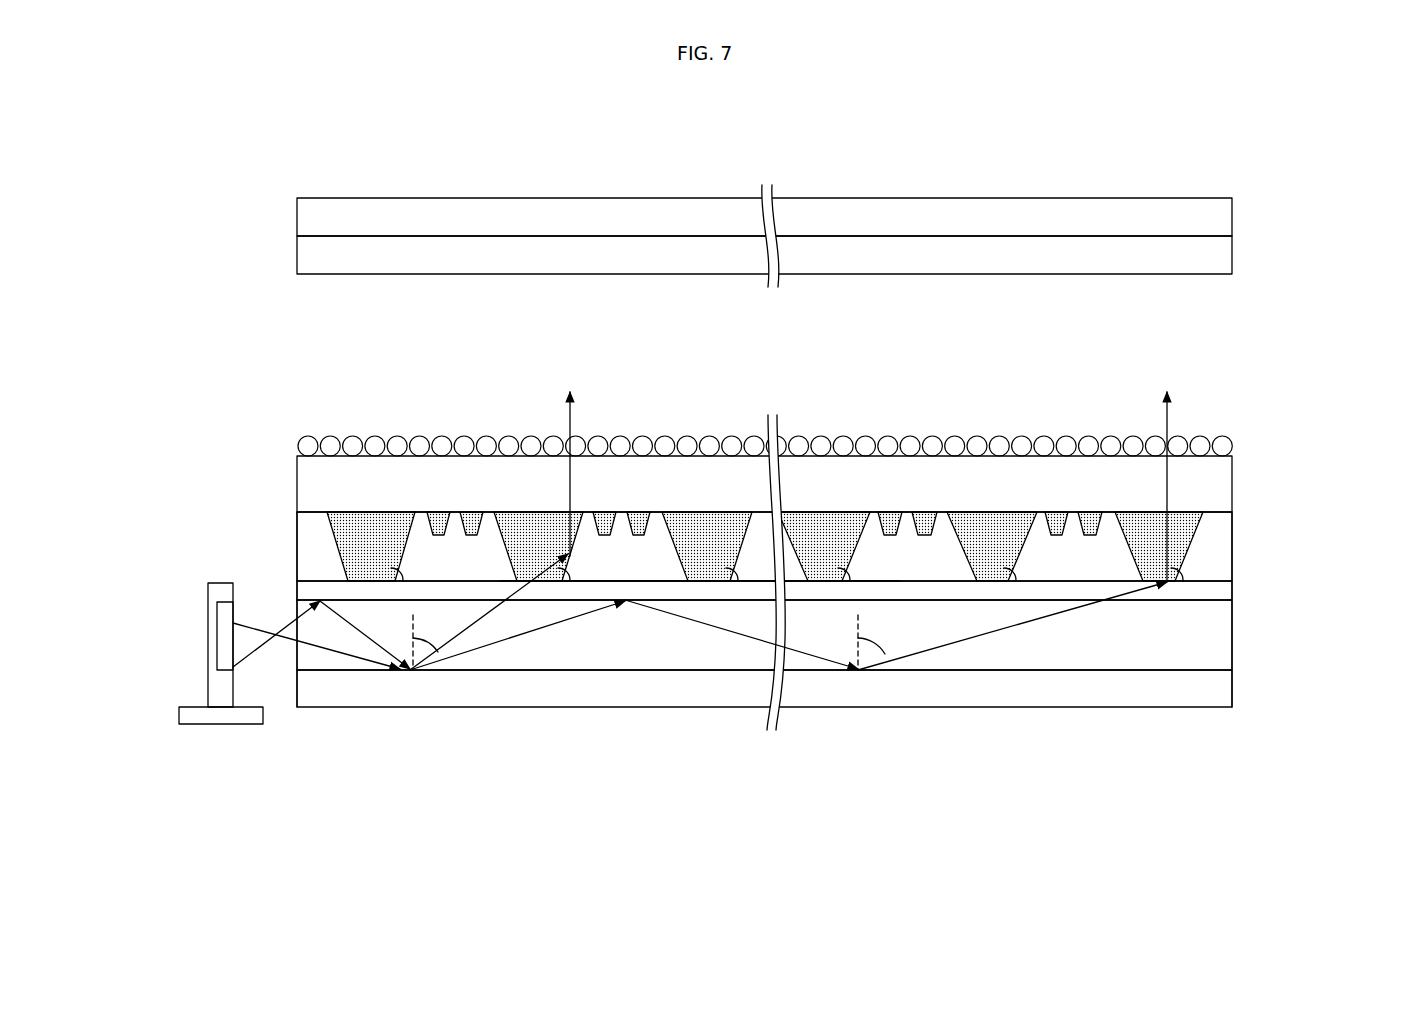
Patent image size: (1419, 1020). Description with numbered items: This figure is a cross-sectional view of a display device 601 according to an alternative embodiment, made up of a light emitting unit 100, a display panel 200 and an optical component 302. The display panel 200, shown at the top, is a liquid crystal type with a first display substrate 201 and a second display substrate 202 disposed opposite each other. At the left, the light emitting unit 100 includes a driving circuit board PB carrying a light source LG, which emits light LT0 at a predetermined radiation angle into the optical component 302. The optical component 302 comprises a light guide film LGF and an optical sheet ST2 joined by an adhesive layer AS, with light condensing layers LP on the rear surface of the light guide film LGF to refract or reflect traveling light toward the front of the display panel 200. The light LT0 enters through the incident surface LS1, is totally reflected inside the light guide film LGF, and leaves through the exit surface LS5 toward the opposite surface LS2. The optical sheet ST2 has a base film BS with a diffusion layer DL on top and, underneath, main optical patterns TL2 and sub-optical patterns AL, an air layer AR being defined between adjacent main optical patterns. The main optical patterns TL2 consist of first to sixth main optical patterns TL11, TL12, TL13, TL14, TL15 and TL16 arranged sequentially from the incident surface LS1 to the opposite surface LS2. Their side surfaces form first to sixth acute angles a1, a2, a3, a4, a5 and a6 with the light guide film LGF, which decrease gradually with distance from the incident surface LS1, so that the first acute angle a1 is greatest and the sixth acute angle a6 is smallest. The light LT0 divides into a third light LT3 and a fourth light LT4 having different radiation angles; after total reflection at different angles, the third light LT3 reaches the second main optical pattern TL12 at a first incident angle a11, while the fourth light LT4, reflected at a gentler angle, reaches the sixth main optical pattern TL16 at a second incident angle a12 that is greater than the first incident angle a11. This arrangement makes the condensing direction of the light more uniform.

The display device 601 is at (1242, 140).
The display panel 200 is at (831, 236).
The first display substrate 201 is at (1220, 255).
The second display substrate 202 is at (1220, 216).
The optical component 302 is at (794, 556).
The optical sheet ST2 is at (825, 473).
The diffusion layer DL is at (1226, 445).
The base film BS is at (1220, 487).
The main optical patterns TL2 is at (764, 543).
The first main optical pattern TL11 is at (367, 520).
The second main optical pattern TL12 is at (520, 520).
The third main optical pattern TL13 is at (703, 520).
The fourth main optical pattern TL14 is at (820, 520).
The fifth main optical pattern TL15 is at (990, 520).
The sixth main optical pattern TL16 is at (1159, 467).
The sub-optical patterns AL is at (1090, 536).
The air layer AR is at (1071, 563).
The adhesive layer AS is at (1220, 591).
The light guide film LGF is at (1220, 634).
The light condensing layers LP is at (1182, 692).
The incident surface LS1 is at (297, 655).
The opposite surface LS2 is at (1233, 653).
The exit surface LS5 is at (702, 597).
The third light LT3 is at (490, 615).
The fourth light LT4 is at (552, 625).
The light LT0 is at (575, 773).
The first acute angle a1 is at (412, 569).
The second acute angle a2 is at (579, 569).
The third acute angle a3 is at (745, 569).
The fourth acute angle a4 is at (857, 569).
The fifth acute angle a5 is at (1022, 569).
The sixth acute angle a6 is at (1188, 569).
The first incident angle a11 is at (434, 641).
The second incident angle a12 is at (885, 642).
The light emitting unit 100 is at (200, 707).
The light source LG is at (207, 657).
The driving circuit board PB is at (217, 718).